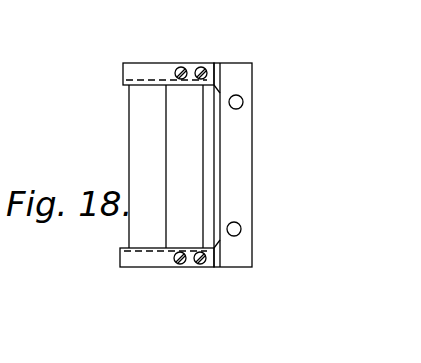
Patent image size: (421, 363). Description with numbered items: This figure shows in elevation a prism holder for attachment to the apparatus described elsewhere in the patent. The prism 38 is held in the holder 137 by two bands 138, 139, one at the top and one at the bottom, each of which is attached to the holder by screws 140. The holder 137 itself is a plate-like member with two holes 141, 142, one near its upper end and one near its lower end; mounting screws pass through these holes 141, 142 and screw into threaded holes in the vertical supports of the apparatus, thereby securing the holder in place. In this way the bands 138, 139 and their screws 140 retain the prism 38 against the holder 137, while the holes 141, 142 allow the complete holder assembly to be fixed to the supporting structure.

The prism 38 is at (129, 157).
The holder 137 is at (245, 158).
The band 138 is at (123, 71).
The band 139 is at (120, 252).
The screws 140 is at (183, 67).
The hole 141 is at (243, 100).
The hole 142 is at (241, 228).